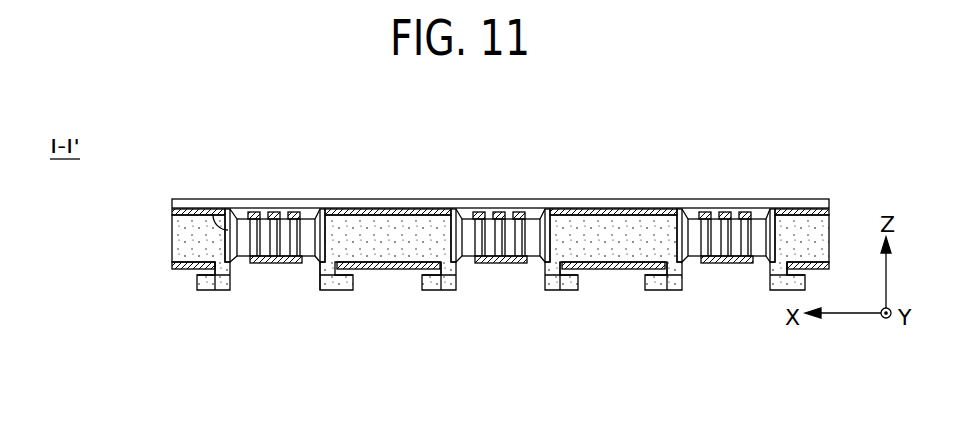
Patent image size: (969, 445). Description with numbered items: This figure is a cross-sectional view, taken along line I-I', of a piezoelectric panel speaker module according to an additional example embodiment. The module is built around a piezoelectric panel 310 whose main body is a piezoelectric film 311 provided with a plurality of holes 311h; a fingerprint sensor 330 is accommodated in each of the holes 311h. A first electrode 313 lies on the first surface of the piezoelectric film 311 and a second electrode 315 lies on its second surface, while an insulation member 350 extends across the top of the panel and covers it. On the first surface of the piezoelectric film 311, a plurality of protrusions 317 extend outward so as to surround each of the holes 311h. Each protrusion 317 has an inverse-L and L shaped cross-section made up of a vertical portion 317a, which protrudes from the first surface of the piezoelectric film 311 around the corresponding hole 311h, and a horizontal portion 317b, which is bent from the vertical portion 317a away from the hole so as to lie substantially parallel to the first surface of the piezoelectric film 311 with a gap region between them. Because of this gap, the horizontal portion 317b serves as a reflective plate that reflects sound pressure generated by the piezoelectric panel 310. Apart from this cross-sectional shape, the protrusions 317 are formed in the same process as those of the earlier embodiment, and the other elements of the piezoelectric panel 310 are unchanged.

The piezoelectric panel 310 is at (62, 203).
The piezoelectric film 311 is at (175, 240).
The hole 311h is at (214, 221).
The first electrode 313 is at (172, 266).
The second electrode 315 is at (172, 211).
The protrusion 317 is at (122, 285).
The vertical portion 317a is at (232, 268).
The horizontal portion 317b is at (205, 283).
The fingerprint sensor 330 is at (297, 288).
The insulation member 350 is at (500, 200).